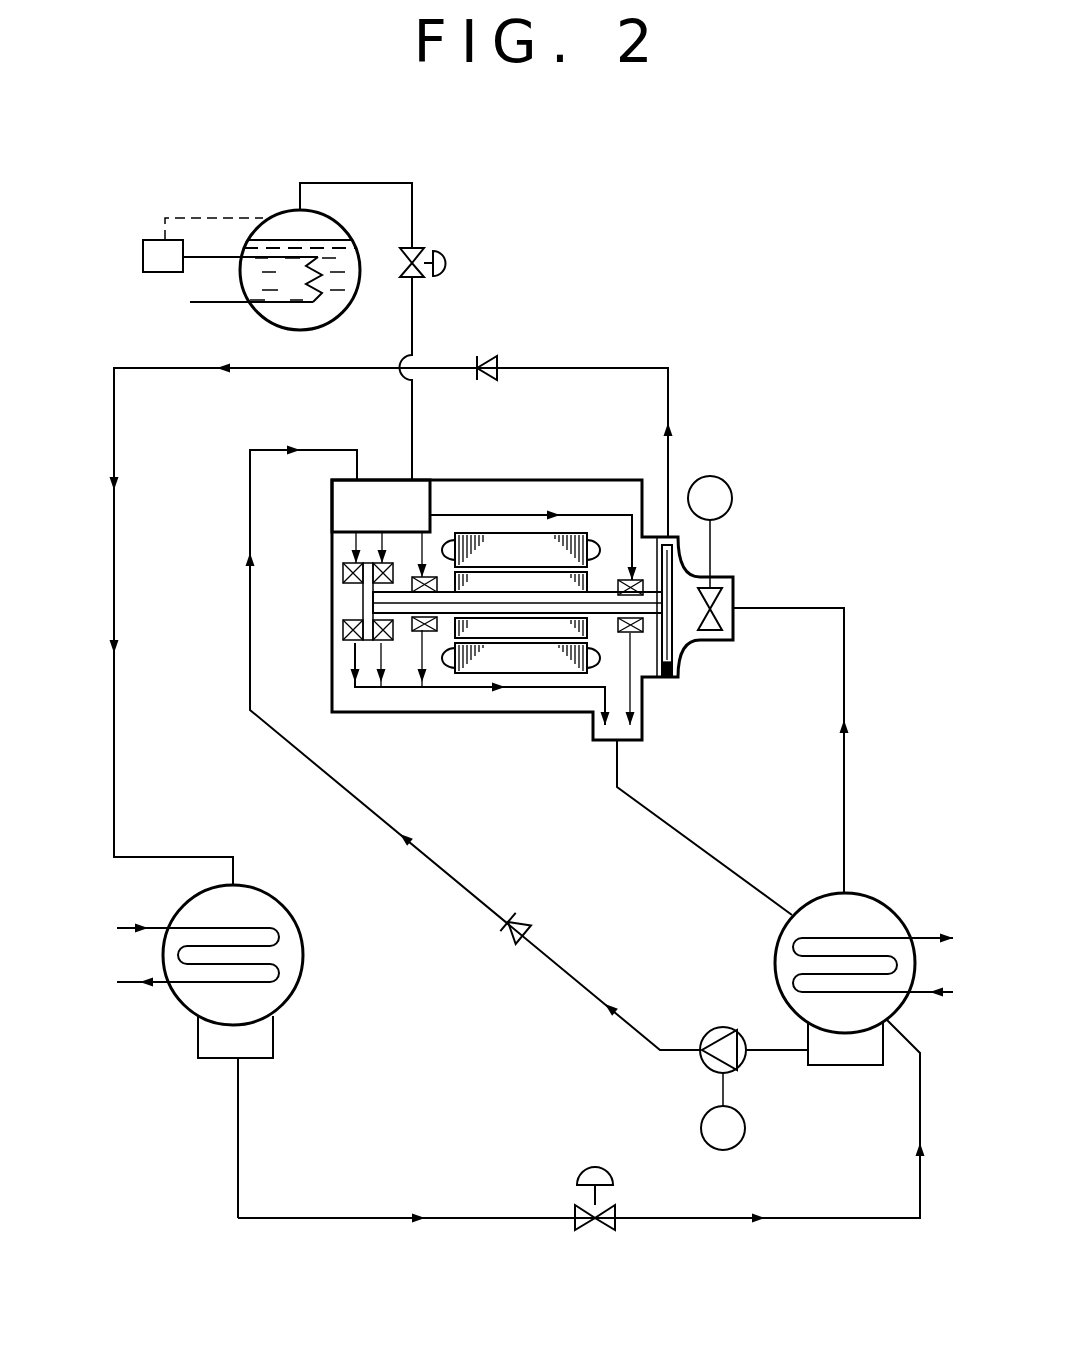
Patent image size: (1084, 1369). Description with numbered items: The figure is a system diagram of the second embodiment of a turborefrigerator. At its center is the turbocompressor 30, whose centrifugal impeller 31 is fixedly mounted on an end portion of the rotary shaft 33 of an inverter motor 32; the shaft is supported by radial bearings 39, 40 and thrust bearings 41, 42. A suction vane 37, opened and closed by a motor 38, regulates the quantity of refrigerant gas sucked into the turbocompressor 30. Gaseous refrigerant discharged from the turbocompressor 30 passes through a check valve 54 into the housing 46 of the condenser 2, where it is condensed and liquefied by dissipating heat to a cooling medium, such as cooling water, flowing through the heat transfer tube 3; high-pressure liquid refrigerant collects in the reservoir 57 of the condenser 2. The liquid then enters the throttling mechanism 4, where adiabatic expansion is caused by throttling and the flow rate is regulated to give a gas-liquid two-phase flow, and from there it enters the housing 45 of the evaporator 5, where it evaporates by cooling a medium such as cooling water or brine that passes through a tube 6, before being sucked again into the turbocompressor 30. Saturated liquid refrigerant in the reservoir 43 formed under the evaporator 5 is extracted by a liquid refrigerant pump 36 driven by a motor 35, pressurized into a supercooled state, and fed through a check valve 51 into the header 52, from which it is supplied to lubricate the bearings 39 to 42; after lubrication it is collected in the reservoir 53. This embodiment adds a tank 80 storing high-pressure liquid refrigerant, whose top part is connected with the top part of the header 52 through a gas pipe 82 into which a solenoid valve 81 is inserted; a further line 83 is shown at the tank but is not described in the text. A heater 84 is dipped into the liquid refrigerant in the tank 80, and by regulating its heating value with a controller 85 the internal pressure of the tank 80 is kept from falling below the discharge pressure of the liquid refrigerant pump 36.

The condenser 2 is at (214, 960).
The heat transfer tube 3 is at (268, 928).
The throttling mechanism 4 is at (577, 1173).
The evaporator 5 is at (826, 930).
The cooling water tube 6 is at (797, 942).
The turbocompressor 30 is at (535, 664).
The centrifugal impeller 31 is at (682, 653).
The inverter motor 32 is at (527, 533).
The rotary shaft 33 is at (615, 577).
The motor 35 is at (702, 1132).
The liquid refrigerant pump 36 is at (702, 1062).
The suction vane 37 is at (725, 617).
The motor 38 is at (729, 484).
The radial bearing 39 is at (640, 634).
The radial bearing 40 is at (435, 631).
The thrust bearing 41 is at (393, 643).
The thrust bearing 42 is at (343, 632).
The reservoir 43 is at (848, 1067).
The housing 45 is at (777, 972).
The housing 46 is at (180, 1000).
The check valve 51 is at (528, 925).
The header 52 is at (417, 495).
The reservoir 53 is at (650, 742).
The check valve 54 is at (497, 357).
The reservoir 57 is at (262, 1058).
The tank 80 is at (285, 212).
The solenoid valve 81 is at (450, 261).
The gas pipe 82 is at (415, 220).
The pipe 83 is at (277, 312).
The heater 84 is at (318, 298).
The controller 85 is at (158, 272).